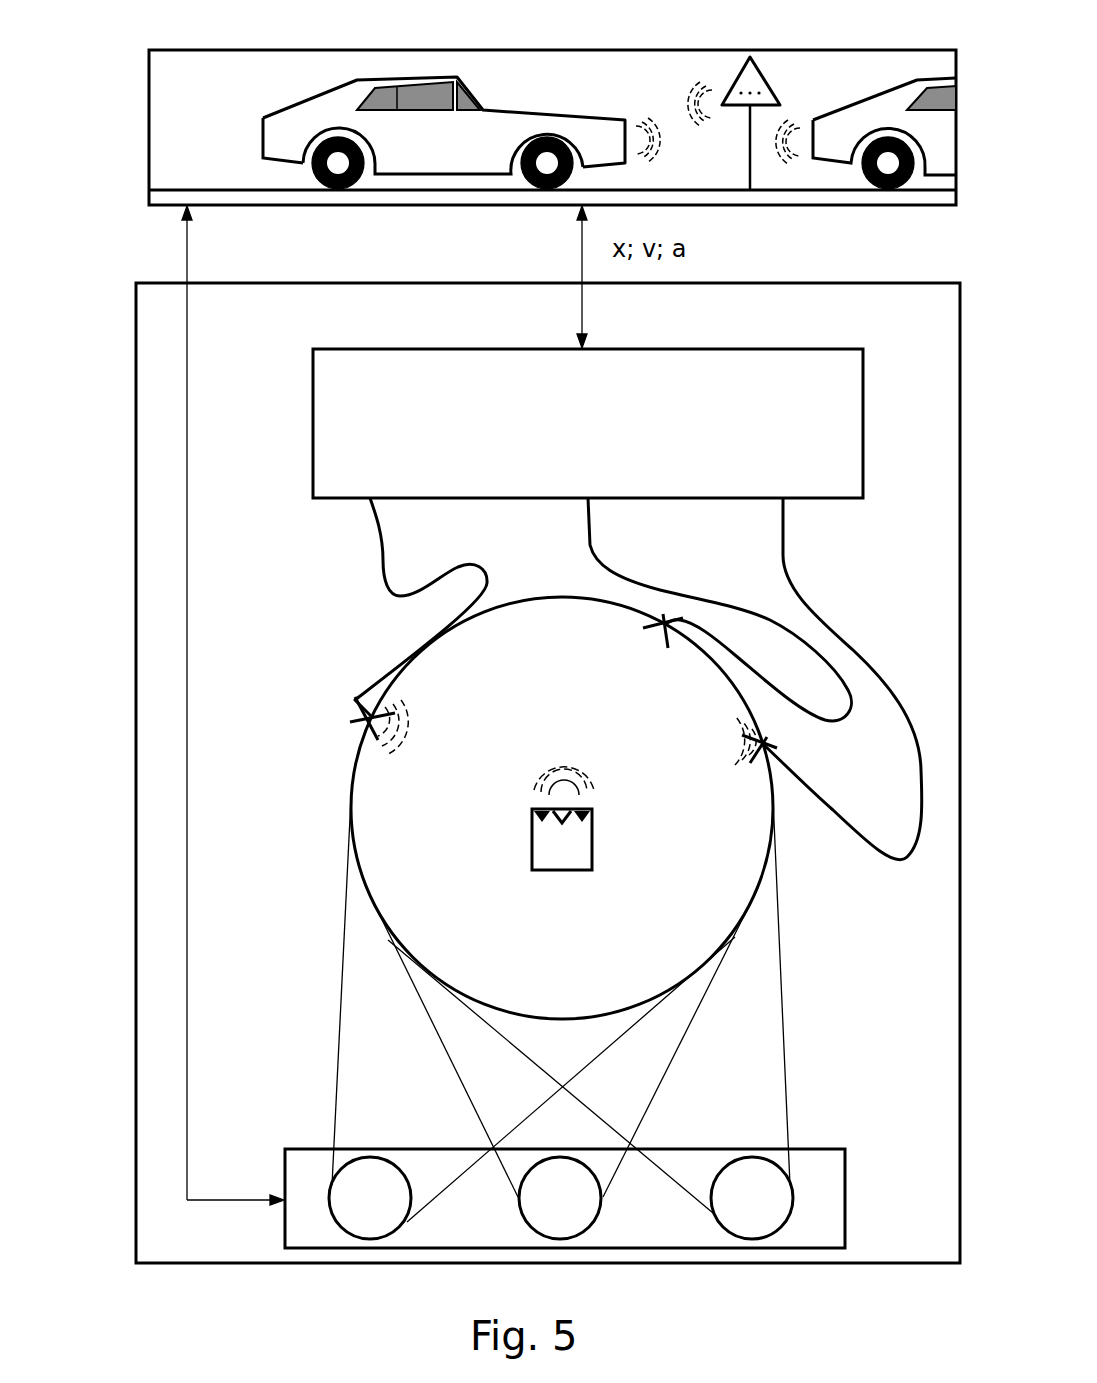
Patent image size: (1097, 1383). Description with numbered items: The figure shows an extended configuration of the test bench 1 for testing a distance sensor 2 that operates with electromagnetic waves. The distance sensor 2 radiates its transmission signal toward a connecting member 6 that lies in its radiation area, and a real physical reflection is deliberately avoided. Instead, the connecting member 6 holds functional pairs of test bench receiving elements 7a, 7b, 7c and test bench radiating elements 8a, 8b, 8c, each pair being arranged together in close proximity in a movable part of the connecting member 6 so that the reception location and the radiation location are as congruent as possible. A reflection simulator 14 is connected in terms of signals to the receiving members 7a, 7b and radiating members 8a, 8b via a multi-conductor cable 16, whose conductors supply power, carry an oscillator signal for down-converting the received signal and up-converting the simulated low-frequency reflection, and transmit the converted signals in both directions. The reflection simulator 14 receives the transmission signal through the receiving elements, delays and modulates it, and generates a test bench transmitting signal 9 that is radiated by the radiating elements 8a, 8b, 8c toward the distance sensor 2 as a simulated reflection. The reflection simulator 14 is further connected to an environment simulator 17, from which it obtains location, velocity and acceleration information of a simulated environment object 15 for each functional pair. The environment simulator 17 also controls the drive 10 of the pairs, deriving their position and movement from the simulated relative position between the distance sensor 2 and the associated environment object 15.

The test bench 1 is at (120, 184).
The environment simulator 17 is at (197, 95).
The simulated environment object 15 is at (767, 77).
The reflection simulator 14 is at (593, 440).
The multi-conductor cable 16 is at (382, 543).
The connecting member 6 is at (776, 808).
The test bench receiving element 7a is at (316, 730).
The test bench radiating element 8a is at (355, 720).
The test bench receiving element 7b is at (785, 610).
The test bench radiating element 8b is at (665, 625).
The test bench receiving element 7c is at (820, 820).
The test bench radiating element 8c is at (763, 744).
The test bench transmitting signal 9 is at (433, 733).
The distance sensor 2 is at (592, 845).
The drive 10 is at (838, 1241).